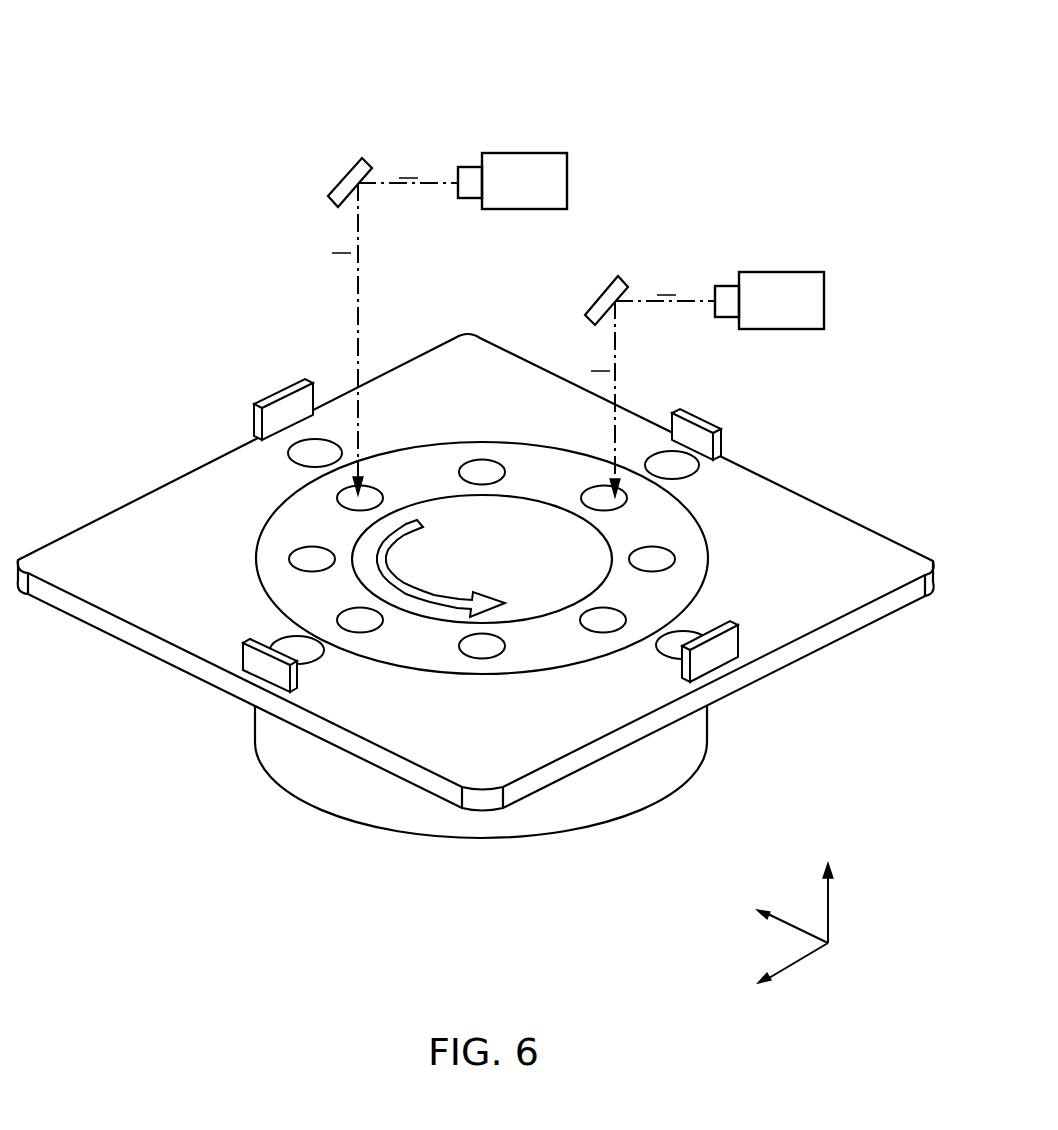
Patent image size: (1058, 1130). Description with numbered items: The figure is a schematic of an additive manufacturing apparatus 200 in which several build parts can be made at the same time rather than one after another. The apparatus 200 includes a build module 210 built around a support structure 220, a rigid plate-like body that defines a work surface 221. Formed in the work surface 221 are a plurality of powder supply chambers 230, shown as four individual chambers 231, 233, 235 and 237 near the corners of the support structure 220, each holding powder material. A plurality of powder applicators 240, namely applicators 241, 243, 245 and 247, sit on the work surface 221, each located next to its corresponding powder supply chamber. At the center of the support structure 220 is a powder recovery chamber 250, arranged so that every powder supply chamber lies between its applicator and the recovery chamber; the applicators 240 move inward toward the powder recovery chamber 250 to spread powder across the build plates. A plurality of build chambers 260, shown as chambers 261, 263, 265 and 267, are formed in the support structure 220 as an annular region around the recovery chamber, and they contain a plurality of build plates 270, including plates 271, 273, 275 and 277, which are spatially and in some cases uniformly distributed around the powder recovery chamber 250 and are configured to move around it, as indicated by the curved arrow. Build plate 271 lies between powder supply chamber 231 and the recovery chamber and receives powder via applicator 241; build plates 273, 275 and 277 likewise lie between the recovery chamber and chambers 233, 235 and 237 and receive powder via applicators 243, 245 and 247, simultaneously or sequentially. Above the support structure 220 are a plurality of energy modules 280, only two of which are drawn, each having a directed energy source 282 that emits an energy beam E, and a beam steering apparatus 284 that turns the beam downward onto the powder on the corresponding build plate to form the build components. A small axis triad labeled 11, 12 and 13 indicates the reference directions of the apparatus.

The additive manufacturing apparatus 200 is at (150, 52).
The build module 210 is at (253, 810).
The support structure 220 is at (827, 575).
The work surface 221 is at (833, 505).
The powder supply chambers 230 is at (490, 512).
The powder supply chamber 231 is at (665, 462).
The powder supply chamber 233 is at (665, 615).
The powder supply chamber 235 is at (306, 652).
The powder supply chamber 237 is at (313, 452).
The powder applicators 240 is at (531, 550).
The powder applicator 241 is at (698, 422).
The powder applicator 243 is at (727, 623).
The powder applicator 245 is at (265, 667).
The powder applicator 247 is at (268, 410).
The powder recovery chamber 250 is at (573, 557).
The build chambers 260 is at (378, 537).
The build chamber 261 is at (585, 493).
The build chamber 263 is at (590, 612).
The build chamber 265 is at (338, 608).
The build chamber 267 is at (347, 493).
The build plates 270 is at (441, 656).
The build plate 271 is at (610, 497).
The build plate 273 is at (606, 618).
The build plate 275 is at (352, 601).
The build plate 277 is at (347, 505).
The energy modules 280 is at (615, 296).
The directed energy source 282 is at (528, 152).
The beam steering apparatus 284 is at (343, 178).
The first direction 11 is at (793, 968).
The second direction 12 is at (830, 912).
The third direction 13 is at (780, 917).